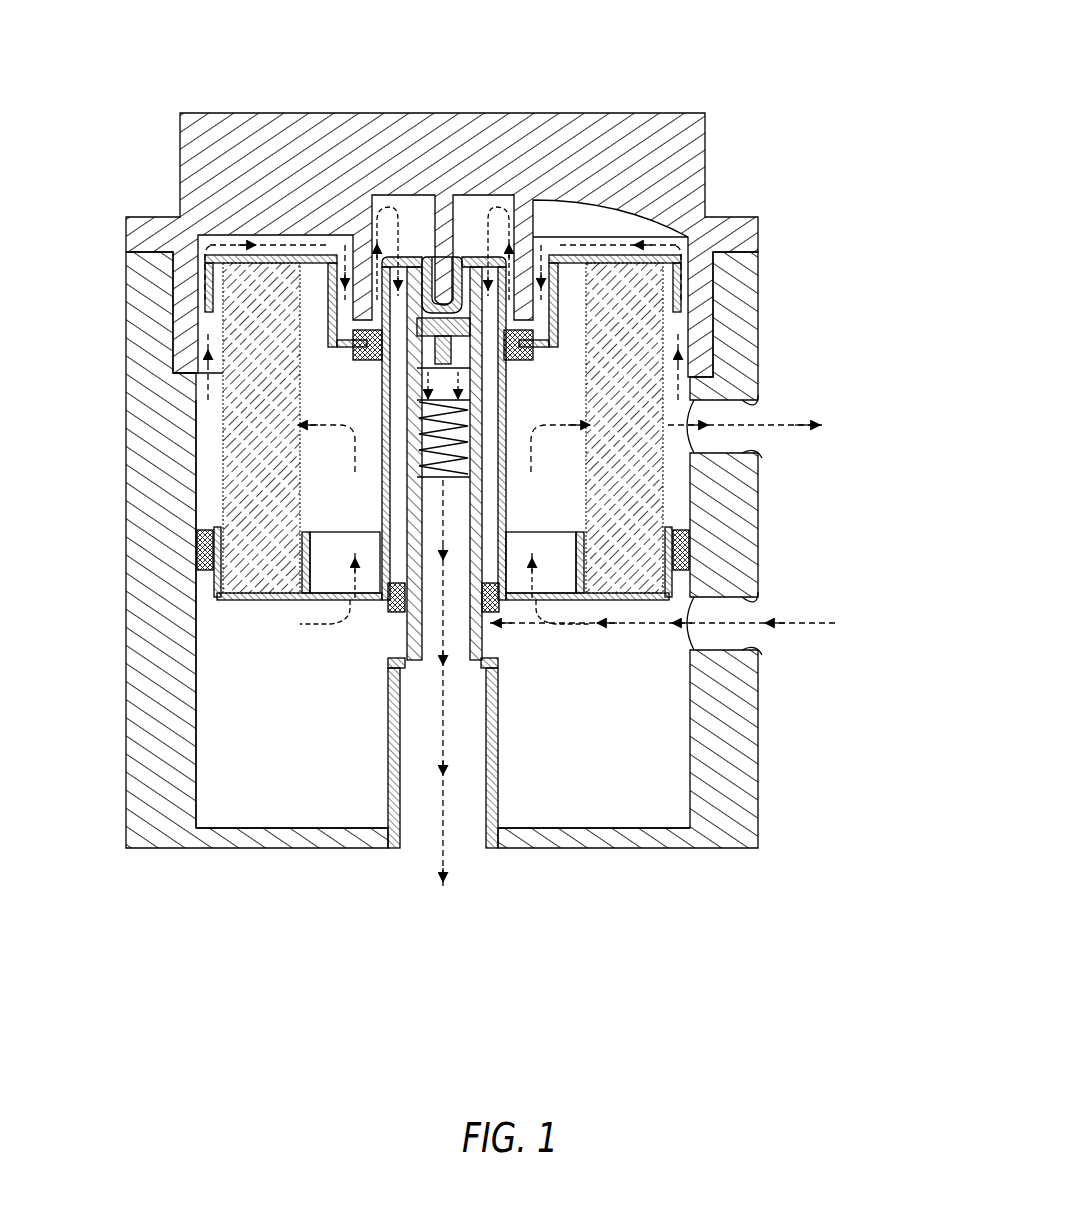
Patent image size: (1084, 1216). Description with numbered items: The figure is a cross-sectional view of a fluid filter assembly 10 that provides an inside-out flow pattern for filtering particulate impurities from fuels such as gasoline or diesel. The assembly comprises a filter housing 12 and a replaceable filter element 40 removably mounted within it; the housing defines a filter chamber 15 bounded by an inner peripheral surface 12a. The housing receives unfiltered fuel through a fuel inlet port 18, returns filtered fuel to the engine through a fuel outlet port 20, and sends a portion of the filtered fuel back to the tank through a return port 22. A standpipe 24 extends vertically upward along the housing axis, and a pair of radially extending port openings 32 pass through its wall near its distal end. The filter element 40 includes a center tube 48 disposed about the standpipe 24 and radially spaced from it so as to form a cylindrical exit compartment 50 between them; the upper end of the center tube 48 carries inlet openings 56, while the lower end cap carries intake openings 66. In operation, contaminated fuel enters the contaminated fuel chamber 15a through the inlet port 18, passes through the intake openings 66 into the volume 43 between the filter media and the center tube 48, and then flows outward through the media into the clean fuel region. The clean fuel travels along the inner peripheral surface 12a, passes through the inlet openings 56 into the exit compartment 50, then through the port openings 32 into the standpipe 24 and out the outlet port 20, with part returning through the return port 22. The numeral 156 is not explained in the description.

The fluid filter assembly 10 is at (783, 82).
The filter housing 12 is at (125, 745).
The inner peripheral surface 12a is at (196, 724).
The filter chamber 15 is at (302, 722).
The contaminated fuel chamber 15a is at (277, 806).
The fuel inlet port 18 is at (740, 640).
The fuel outlet port 20 is at (470, 832).
The return port 22 is at (740, 444).
The standpipe 24 is at (486, 512).
The port openings 32 is at (393, 368).
The filter element 40 is at (219, 487).
The volume 43 is at (338, 479).
The center tube 48 is at (510, 398).
The exit compartment 50 is at (400, 497).
The inlet openings 56 is at (408, 262).
The intake openings 66 is at (350, 599).
The outer flow channel 156 is at (206, 452).